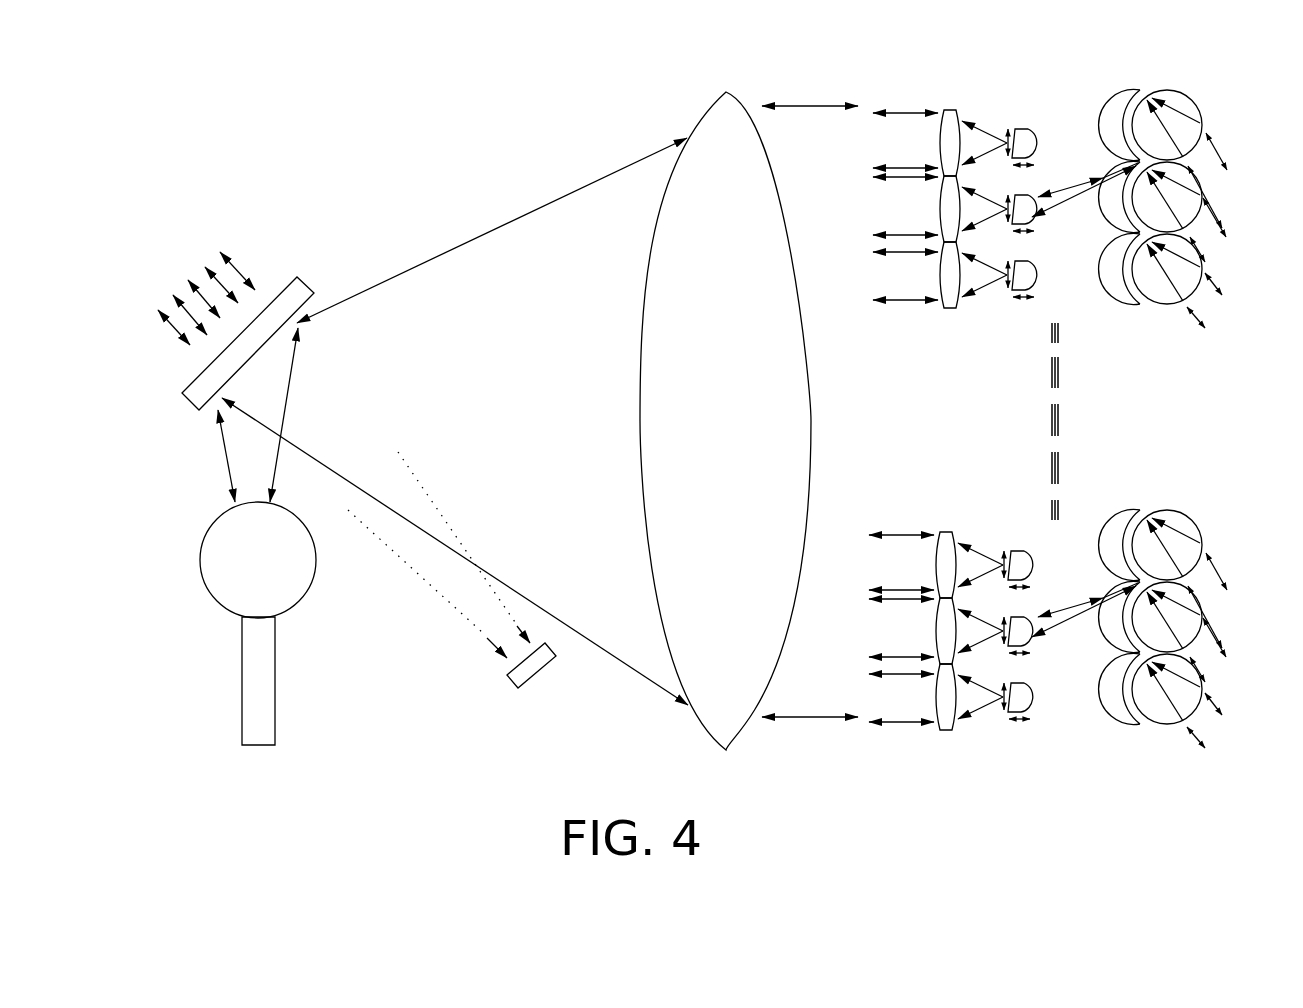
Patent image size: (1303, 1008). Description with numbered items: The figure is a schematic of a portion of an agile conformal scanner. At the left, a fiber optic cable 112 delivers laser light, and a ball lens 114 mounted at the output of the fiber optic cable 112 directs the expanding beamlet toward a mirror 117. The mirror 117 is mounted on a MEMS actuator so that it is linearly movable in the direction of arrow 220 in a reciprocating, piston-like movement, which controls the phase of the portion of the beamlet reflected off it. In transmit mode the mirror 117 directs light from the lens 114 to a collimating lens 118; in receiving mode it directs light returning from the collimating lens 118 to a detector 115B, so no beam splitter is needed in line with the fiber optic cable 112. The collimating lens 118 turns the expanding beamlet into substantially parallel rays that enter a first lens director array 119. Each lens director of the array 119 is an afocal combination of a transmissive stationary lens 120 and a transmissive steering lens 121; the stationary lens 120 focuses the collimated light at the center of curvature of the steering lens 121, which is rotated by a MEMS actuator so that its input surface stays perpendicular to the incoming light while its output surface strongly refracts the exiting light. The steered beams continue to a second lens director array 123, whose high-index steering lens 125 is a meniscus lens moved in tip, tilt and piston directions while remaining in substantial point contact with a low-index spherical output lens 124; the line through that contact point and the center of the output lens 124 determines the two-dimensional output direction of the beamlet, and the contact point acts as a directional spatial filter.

The fiber optic cable 112 is at (242, 712).
The lens 114 is at (296, 604).
The detector 115B is at (533, 676).
The mirror 117 is at (312, 282).
The collimating lens 118 is at (713, 110).
The lens director array 119 is at (981, 441).
The stationary lens 120 is at (949, 108).
The steering lens 121 is at (1022, 127).
The lens director array 123 is at (1147, 431).
The output lens 124 is at (1176, 90).
The steering lens 125 is at (1130, 92).
The arrow 220 is at (240, 266).